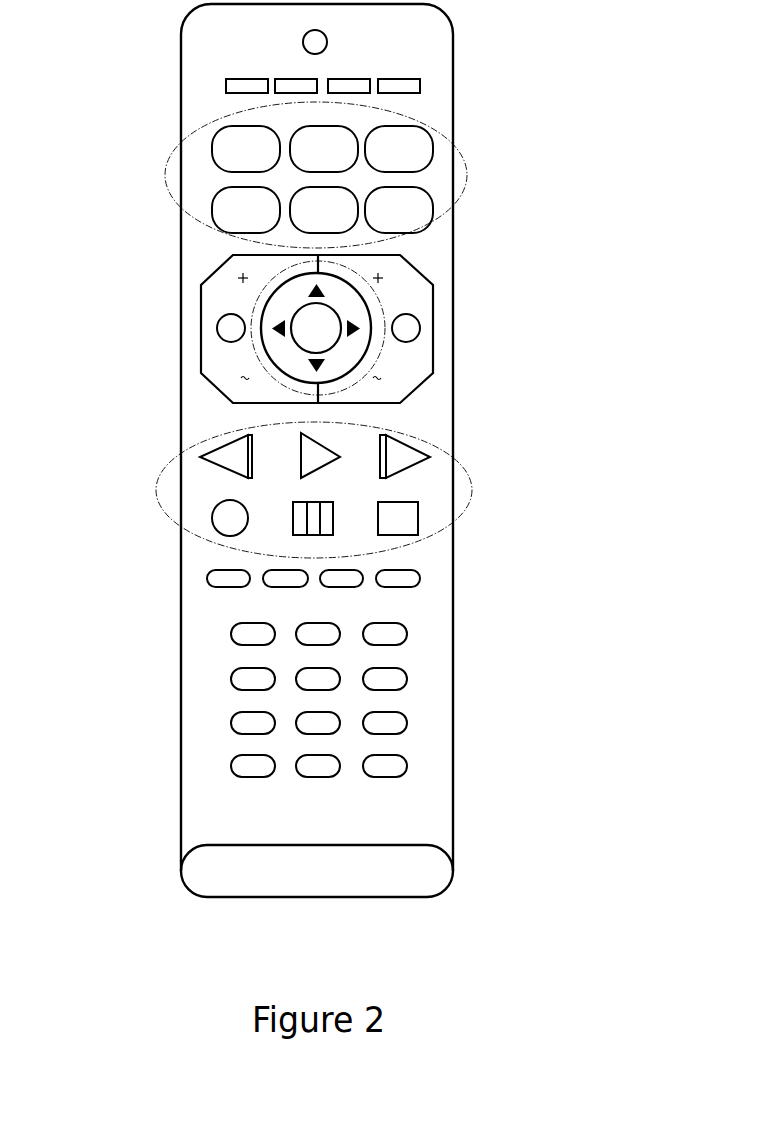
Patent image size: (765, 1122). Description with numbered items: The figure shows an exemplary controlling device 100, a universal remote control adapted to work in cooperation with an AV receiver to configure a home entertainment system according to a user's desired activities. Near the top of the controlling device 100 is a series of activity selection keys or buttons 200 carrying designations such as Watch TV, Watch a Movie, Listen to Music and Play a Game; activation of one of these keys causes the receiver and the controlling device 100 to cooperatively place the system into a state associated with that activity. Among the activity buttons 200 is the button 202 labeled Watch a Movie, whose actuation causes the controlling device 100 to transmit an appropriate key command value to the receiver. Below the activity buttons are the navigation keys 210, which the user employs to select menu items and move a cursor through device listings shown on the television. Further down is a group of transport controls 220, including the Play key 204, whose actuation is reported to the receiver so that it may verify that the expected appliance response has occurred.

The controlling device 100 is at (532, 915).
The activity selection keys 200 is at (467, 167).
The Watch a Movie button 202 is at (327, 133).
The Play key 204 is at (320, 462).
The navigation keys 210 is at (377, 302).
The transport control buttons 220 is at (470, 467).